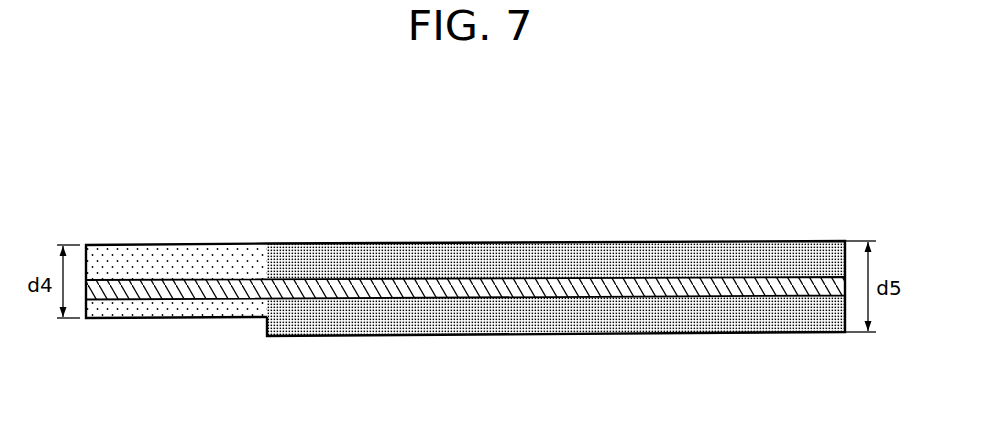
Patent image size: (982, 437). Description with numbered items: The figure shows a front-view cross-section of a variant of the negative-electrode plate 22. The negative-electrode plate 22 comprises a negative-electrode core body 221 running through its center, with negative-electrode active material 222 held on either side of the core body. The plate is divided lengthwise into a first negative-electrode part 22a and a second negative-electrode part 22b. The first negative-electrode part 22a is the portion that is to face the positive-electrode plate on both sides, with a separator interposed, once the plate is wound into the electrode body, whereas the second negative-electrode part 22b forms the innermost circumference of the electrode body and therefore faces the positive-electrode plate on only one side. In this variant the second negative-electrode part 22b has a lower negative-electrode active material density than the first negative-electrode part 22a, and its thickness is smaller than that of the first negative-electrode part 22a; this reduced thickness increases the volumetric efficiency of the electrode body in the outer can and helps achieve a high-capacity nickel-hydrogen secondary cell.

The negative-electrode plate 22 is at (466, 251).
The first negative-electrode part 22a is at (556, 285).
The second negative-electrode part 22b is at (267, 224).
The negative-electrode core body 221 is at (653, 288).
The negative-electrode active material 222 is at (846, 224).